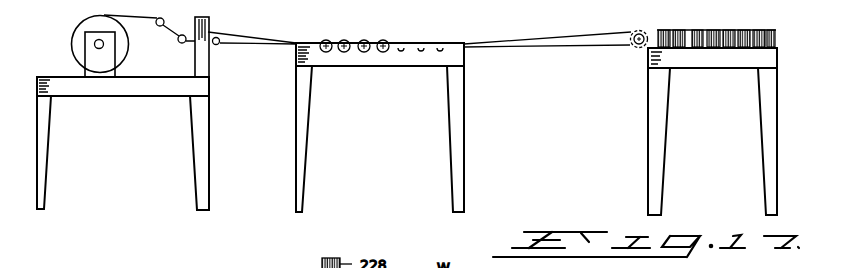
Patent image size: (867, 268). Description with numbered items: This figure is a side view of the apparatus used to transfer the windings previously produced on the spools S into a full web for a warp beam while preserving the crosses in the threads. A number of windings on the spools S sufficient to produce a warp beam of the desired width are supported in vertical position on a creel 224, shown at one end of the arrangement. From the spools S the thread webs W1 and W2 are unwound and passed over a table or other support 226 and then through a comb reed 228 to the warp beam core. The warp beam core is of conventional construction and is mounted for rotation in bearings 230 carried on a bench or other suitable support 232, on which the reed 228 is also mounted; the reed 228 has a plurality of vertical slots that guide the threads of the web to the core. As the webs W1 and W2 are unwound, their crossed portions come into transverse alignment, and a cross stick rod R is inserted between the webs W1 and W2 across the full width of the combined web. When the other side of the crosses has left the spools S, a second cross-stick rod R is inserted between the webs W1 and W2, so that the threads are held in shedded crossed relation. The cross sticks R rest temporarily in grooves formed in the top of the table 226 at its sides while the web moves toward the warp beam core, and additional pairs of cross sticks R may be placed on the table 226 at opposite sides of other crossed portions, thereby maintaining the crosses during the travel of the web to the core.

The creel 224 is at (648, 94).
The table 226 is at (396, 63).
The comb reed 228 is at (210, 22).
The bearings 230 is at (85, 52).
The bench 232 is at (157, 90).
The cross stick rod R is at (383, 40).
The spools S is at (723, 28).
The web W1 is at (587, 36).
The web W2 is at (586, 48).